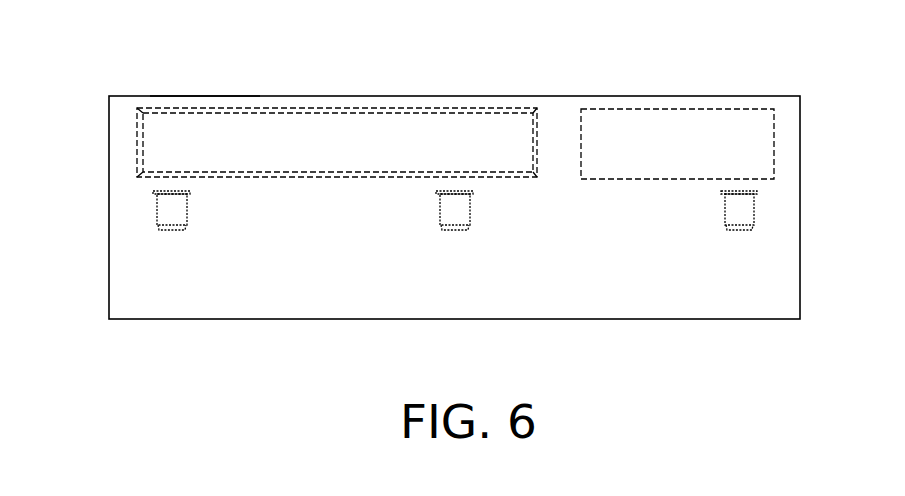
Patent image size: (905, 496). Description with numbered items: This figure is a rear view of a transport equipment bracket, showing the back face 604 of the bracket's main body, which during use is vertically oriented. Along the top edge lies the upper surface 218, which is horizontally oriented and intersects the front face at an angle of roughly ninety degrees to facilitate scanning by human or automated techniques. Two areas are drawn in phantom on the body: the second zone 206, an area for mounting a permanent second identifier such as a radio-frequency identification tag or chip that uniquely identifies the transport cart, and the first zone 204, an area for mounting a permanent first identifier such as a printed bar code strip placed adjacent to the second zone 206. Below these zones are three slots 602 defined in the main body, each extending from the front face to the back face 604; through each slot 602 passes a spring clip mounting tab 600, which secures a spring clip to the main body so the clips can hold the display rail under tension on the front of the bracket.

The first zone 204 is at (667, 108).
The second zone 206 is at (338, 125).
The upper surface 218 is at (210, 95).
The spring clip mounting tab 600 is at (174, 216).
The slot 602 is at (153, 195).
The back face 604 is at (204, 296).